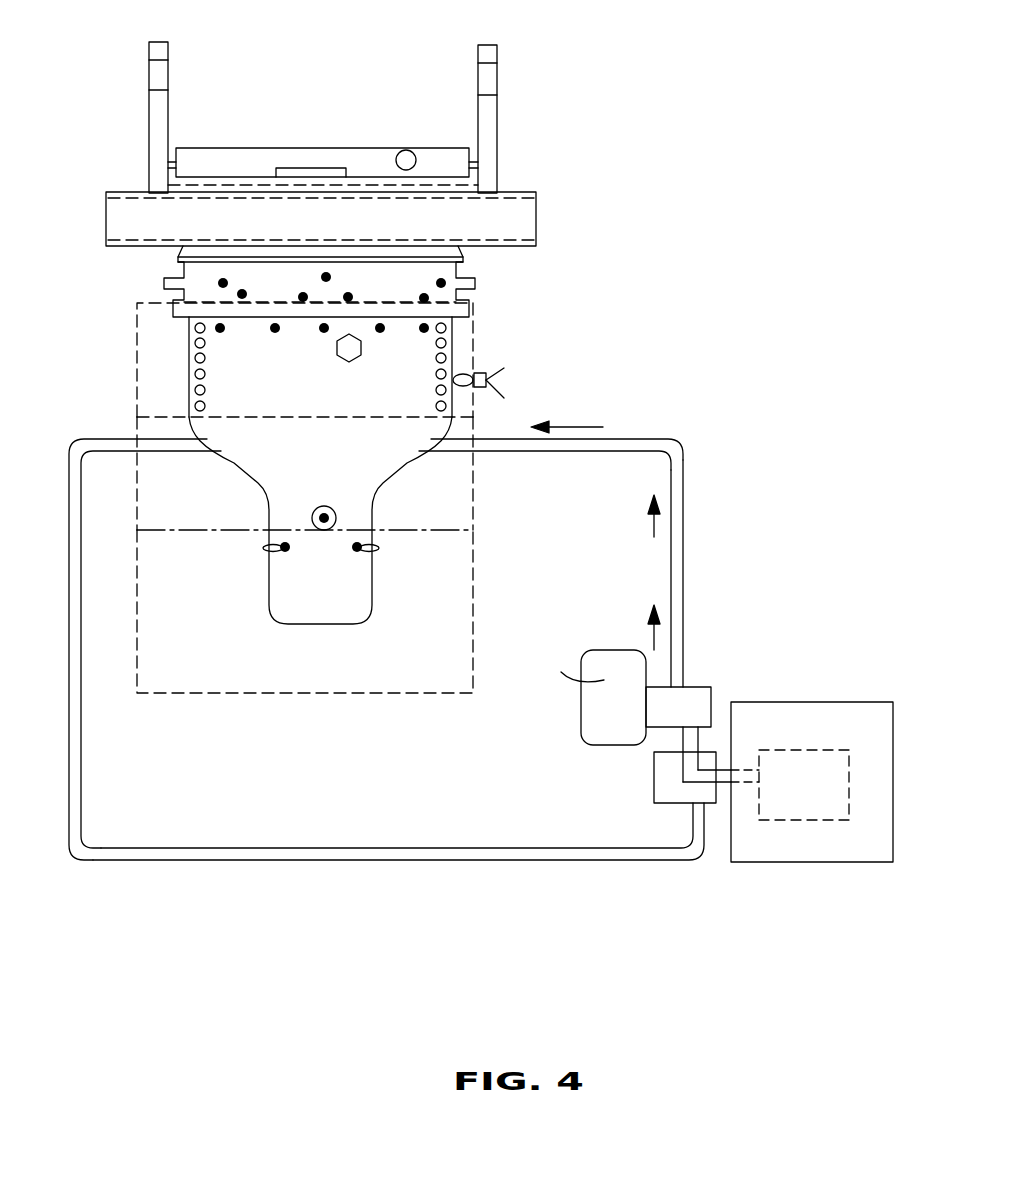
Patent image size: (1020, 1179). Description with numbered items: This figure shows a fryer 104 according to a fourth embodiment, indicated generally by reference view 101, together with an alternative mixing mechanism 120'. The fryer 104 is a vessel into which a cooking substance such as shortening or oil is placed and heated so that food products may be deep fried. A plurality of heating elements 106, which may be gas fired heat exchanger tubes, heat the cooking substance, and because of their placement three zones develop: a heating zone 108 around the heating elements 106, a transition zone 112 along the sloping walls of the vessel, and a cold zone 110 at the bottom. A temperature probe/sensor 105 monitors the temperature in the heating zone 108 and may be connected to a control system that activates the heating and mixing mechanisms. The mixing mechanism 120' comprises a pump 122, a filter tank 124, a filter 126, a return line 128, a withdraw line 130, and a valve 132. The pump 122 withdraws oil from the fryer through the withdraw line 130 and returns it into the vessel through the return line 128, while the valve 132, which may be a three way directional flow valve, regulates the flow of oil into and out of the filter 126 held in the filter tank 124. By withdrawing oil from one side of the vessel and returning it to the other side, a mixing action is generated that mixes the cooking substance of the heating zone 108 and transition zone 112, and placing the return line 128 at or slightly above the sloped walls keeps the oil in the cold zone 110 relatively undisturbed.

The fryer view 101 is at (582, 284).
The fryer 104 is at (187, 330).
The temperature probe/sensor 105 is at (495, 380).
The heating elements 106 is at (478, 351).
The heating zone 108 is at (134, 393).
The cold zone 110 is at (473, 613).
The transition zone 112 is at (472, 500).
The mixing mechanism 120' is at (445, 640).
The pump 122 is at (580, 717).
The filter tank 124 is at (801, 702).
The filter 126 is at (849, 783).
The return line 128 is at (682, 596).
The withdraw line 130 is at (455, 861).
The valve 132 is at (652, 775).